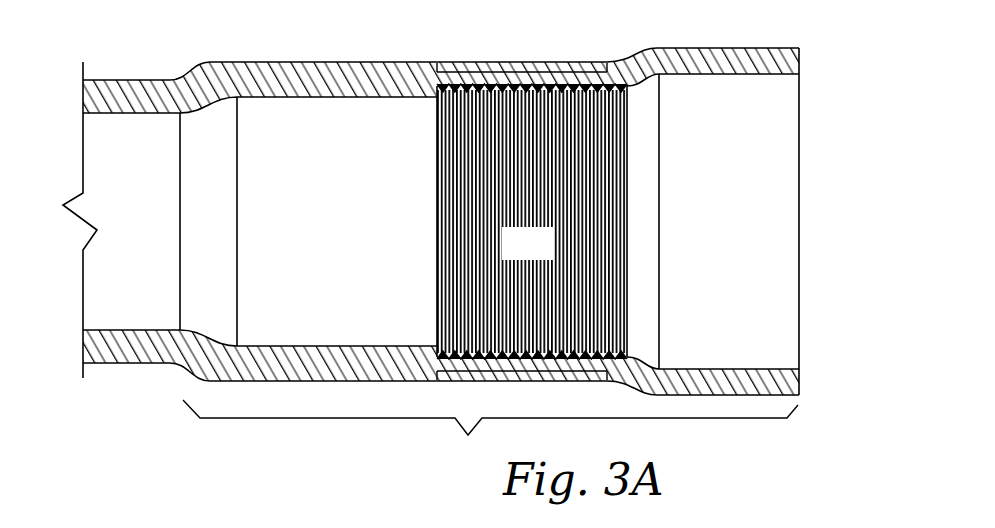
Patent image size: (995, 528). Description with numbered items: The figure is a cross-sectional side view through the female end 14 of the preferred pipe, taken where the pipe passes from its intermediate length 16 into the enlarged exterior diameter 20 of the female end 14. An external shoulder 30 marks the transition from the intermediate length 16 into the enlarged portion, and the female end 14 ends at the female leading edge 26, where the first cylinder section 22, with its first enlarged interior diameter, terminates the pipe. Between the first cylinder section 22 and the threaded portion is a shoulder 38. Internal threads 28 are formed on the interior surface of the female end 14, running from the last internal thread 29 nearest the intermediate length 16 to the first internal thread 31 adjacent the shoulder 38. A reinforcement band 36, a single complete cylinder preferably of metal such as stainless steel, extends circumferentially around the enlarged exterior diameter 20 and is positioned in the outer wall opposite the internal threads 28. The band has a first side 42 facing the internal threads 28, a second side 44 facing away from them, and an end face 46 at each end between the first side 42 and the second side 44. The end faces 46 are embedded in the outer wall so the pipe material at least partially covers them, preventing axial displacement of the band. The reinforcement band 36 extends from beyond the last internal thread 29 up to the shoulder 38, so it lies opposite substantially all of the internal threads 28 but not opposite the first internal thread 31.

The female end 14 is at (320, 50).
The intermediate length 16 is at (110, 80).
The enlarged exterior diameter 20 is at (490, 433).
The first cylinder section 22 is at (706, 246).
The female leading edge 26 is at (800, 63).
The internal threads 28 is at (517, 253).
The last internal thread 29 is at (438, 228).
The external shoulder 30 is at (190, 63).
The first internal thread 31 is at (625, 232).
The reinforcement band 36 is at (502, 63).
The shoulder 38 is at (626, 62).
The first side 42 is at (460, 78).
The second side 44 is at (472, 58).
The end face 46 is at (420, 63).